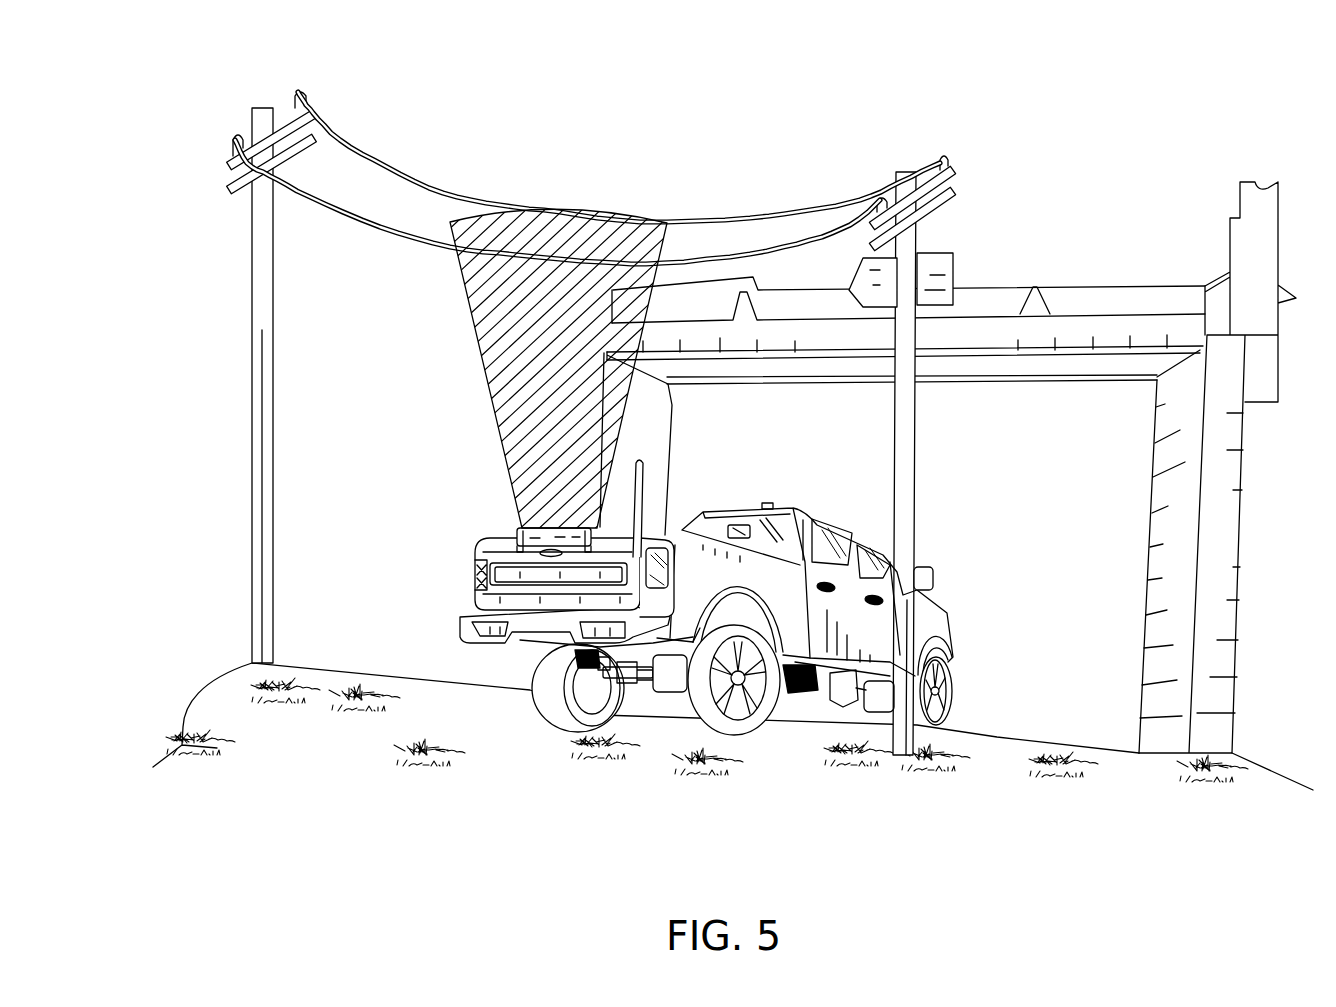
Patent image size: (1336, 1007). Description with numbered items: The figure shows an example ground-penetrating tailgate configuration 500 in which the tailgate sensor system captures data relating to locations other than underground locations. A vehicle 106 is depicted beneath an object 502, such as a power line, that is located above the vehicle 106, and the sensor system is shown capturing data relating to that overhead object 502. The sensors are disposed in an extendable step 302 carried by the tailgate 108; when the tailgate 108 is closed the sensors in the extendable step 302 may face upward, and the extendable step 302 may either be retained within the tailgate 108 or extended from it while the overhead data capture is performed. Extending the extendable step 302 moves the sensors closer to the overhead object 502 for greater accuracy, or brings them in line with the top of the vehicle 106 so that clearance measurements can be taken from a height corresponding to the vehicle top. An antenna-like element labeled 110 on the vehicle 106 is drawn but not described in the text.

The ground-penetrating tailgate configuration 500 is at (240, 62).
The object 502 is at (240, 128).
The vehicle 106 is at (797, 512).
The tailgate 108 is at (480, 573).
The extendable step 302 is at (517, 538).
The antenna 110 is at (643, 462).